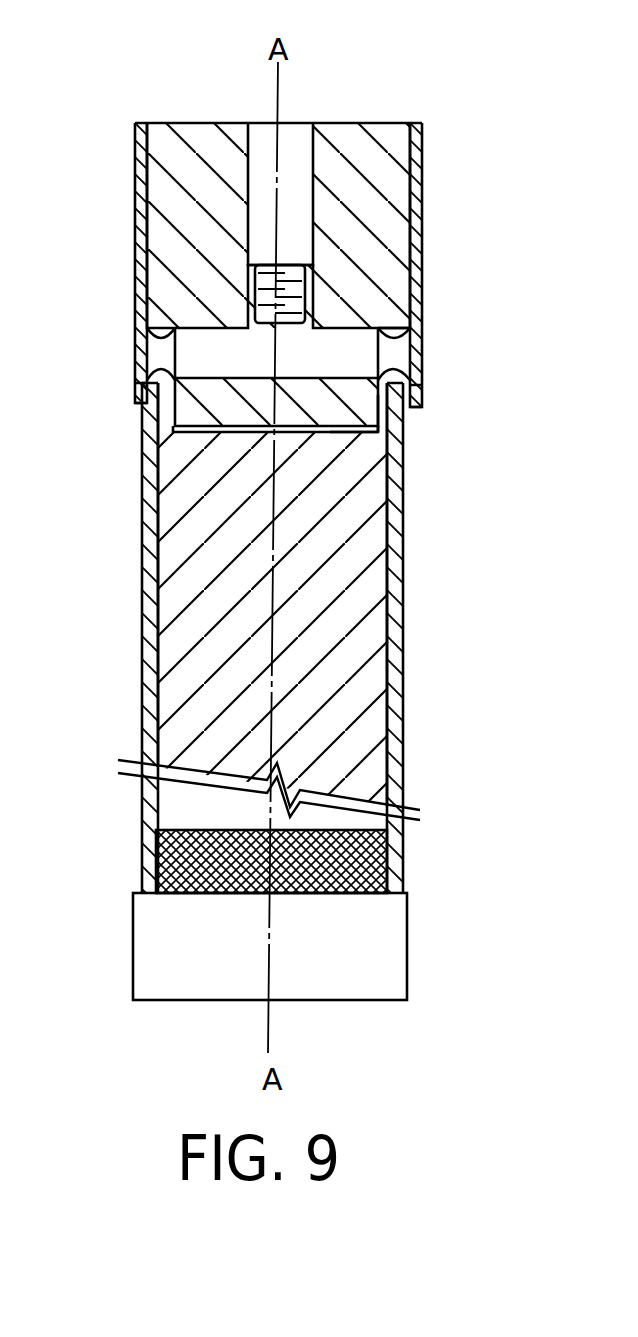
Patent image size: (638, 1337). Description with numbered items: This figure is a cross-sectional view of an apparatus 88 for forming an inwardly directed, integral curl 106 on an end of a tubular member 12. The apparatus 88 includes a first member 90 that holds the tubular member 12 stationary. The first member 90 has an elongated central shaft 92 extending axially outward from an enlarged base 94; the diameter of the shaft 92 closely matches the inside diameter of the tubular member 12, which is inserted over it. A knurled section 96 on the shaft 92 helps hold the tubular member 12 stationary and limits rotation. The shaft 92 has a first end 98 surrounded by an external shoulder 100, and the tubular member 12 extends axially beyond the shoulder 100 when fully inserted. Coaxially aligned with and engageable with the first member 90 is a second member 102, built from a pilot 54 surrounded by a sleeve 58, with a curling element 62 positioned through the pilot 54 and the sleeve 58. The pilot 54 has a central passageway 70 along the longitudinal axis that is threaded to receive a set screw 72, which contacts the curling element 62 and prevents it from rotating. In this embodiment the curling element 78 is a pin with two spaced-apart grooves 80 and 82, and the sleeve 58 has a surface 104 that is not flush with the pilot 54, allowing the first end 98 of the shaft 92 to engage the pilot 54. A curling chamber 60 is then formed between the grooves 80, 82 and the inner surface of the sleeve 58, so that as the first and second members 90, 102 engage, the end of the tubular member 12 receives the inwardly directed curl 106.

The tubular member 12 is at (405, 640).
The pilot 54 is at (382, 122).
The sleeve 58 is at (137, 200).
The curling chamber 60 is at (135, 398).
The curling element 62 is at (378, 325).
The central passageway 70 is at (258, 143).
The set screw 72 is at (296, 264).
The curling element 78 is at (145, 305).
The groove 80 is at (145, 360).
The groove 82 is at (394, 368).
The apparatus 88 is at (483, 298).
The first member 90 is at (457, 680).
The central shaft 92 is at (370, 585).
The enlarged base 94 is at (373, 947).
The knurled section 96 is at (387, 855).
The first end 98 is at (352, 438).
The external shoulder 100 is at (413, 443).
The second member 102 is at (432, 157).
The surface 104 is at (420, 403).
The inwardly directed curl 106 is at (403, 430).